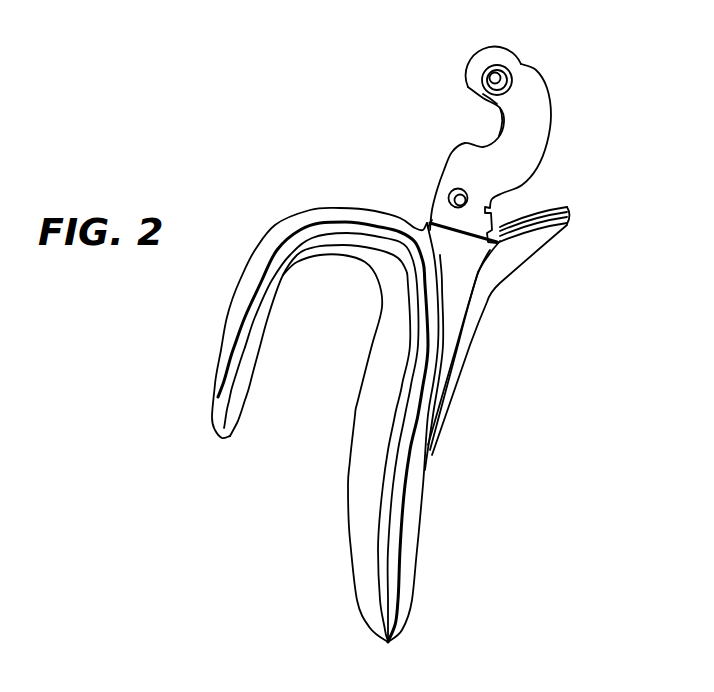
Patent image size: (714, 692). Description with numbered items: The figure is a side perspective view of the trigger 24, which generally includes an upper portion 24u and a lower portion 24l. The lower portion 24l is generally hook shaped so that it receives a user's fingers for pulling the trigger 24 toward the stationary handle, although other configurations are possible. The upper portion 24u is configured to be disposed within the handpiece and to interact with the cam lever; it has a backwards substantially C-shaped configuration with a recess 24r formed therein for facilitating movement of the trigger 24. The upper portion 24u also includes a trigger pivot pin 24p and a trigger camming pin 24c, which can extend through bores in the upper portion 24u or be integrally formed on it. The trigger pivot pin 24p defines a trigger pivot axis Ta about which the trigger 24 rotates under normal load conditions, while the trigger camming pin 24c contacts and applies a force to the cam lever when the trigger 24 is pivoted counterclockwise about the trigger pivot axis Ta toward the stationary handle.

The trigger 24 is at (285, 101).
The upper portion 24u is at (634, 90).
The lower portion 24l is at (465, 648).
The trigger pivot pin 24p is at (495, 67).
The recess 24r is at (486, 119).
The trigger camming pin 24c is at (452, 190).
The trigger pivot axis Ta is at (487, 93).